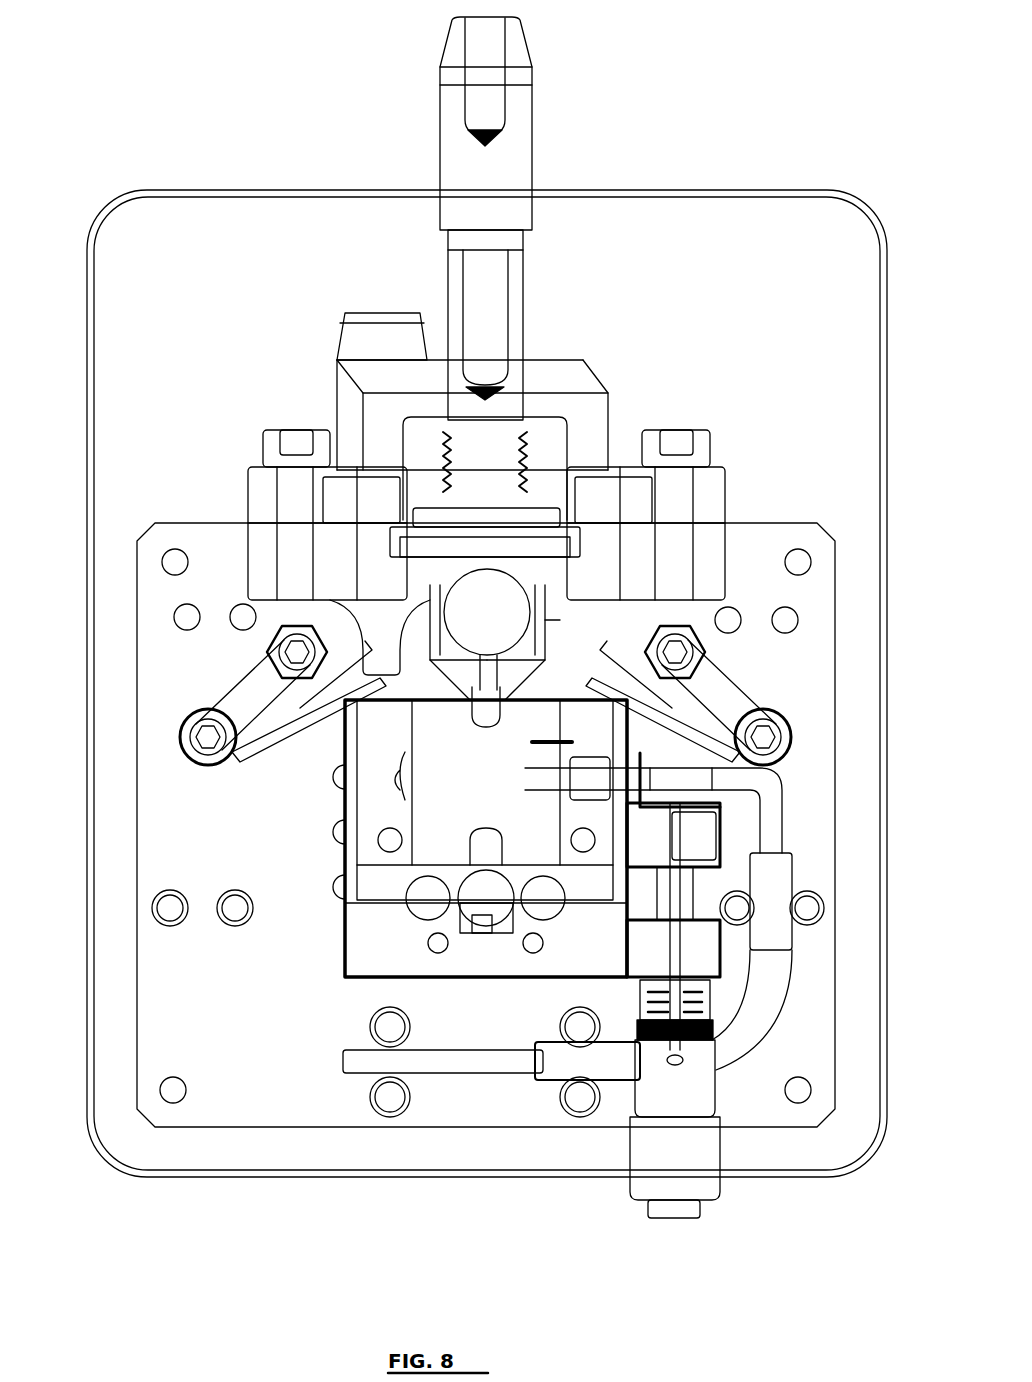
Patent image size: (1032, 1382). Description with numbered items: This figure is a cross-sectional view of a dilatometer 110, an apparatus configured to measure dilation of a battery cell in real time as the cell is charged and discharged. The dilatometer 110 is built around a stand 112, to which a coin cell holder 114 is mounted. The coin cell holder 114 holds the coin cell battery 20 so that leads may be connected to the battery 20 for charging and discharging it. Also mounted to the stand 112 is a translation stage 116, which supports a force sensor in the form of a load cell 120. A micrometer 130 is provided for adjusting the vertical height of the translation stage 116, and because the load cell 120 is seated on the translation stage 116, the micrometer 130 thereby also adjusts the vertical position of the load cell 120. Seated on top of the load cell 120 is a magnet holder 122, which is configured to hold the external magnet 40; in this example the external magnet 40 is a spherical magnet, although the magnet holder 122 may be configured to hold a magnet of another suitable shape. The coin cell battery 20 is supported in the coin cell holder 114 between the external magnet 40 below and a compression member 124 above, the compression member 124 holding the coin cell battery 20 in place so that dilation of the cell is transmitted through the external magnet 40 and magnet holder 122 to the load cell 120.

The dilatometer 110 is at (140, 84).
The stand 112 is at (90, 708).
The coin cell holder 114 is at (580, 536).
The translation stage 116 is at (373, 890).
The load cell 120 is at (430, 752).
The magnet holder 122 is at (528, 655).
The compression member 124 is at (510, 160).
The micrometer 130 is at (695, 1185).
The coin cell battery 20 is at (400, 546).
The external magnet 40 is at (510, 612).